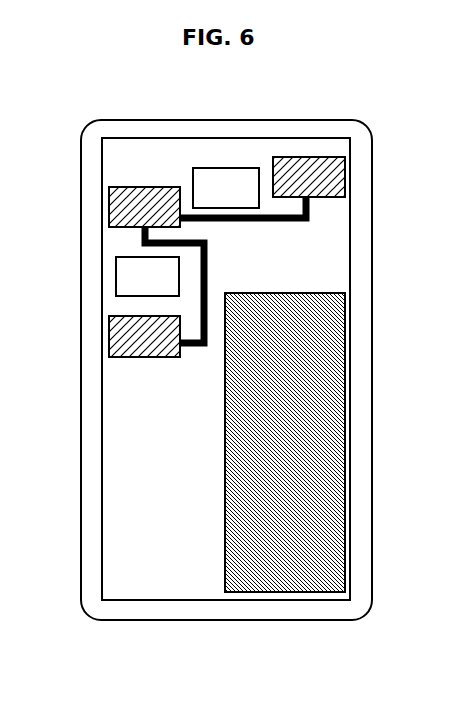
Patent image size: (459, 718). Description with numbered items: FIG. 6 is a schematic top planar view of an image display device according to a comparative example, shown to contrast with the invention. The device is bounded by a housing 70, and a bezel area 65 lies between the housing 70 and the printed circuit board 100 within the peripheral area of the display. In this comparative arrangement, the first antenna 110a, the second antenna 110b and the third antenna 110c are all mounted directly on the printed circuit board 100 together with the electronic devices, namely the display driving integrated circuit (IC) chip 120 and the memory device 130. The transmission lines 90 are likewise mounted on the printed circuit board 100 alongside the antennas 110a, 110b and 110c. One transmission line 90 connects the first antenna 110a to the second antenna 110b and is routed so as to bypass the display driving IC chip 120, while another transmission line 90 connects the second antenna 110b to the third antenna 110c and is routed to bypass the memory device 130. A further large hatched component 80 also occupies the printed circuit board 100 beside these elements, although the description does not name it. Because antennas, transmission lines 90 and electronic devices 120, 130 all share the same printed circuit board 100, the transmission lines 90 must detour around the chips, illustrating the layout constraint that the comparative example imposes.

The printed circuit board 100 is at (257, 396).
The housing 70 is at (373, 333).
The bezel area 65 is at (366, 477).
The battery 80 is at (285, 587).
The transmission line 90 is at (291, 222).
The first antenna 110a is at (157, 192).
The second antenna 110b is at (310, 172).
The third antenna 110c is at (143, 362).
The display driving integrated circuit (IC) chip 120 is at (225, 180).
The memory device 130 is at (122, 276).